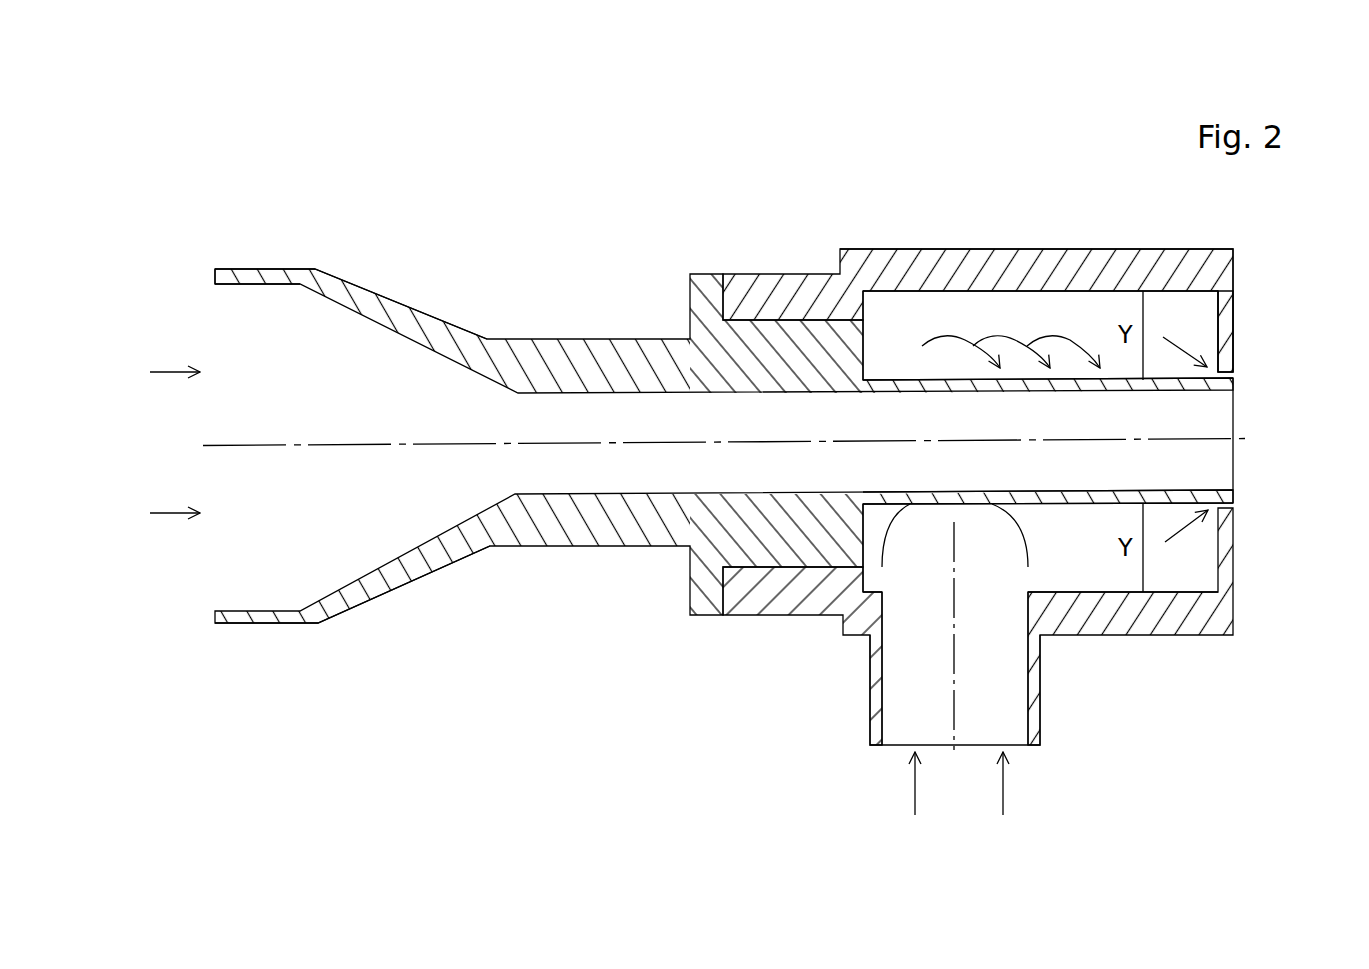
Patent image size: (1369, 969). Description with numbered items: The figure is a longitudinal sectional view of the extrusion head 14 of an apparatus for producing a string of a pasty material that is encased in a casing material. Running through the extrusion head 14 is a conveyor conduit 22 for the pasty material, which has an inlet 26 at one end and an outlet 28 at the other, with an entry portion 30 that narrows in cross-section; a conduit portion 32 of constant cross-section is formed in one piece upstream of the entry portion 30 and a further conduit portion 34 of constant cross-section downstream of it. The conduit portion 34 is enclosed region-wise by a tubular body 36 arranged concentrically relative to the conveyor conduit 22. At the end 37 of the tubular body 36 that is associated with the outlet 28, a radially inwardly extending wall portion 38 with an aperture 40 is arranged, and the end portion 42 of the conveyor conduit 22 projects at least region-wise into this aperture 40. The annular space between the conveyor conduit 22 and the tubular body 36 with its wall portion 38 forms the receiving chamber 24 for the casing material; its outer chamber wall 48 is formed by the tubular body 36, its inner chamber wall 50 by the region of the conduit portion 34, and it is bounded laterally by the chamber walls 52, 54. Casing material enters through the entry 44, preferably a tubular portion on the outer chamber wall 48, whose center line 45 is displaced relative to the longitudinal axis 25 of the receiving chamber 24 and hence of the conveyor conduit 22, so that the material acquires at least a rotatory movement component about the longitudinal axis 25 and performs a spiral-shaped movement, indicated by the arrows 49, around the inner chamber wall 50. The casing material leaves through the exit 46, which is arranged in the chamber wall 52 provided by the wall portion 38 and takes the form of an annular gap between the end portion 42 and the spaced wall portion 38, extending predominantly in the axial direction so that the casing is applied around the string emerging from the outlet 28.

The extrusion head 14 is at (512, 752).
The conveyor conduit 22 is at (552, 604).
The receiving chamber 24 is at (1088, 575).
The longitudinal axis 25 is at (647, 438).
The inlet 26 is at (198, 583).
The outlet 28 is at (1248, 417).
The entry portion 30 is at (447, 347).
The conduit portion 32 is at (252, 278).
The conduit portion 34 is at (1058, 493).
The tubular body 36 is at (980, 268).
The end of the tubular body 37 is at (1242, 258).
The wall portion 38 is at (1225, 315).
The aperture 40 is at (1250, 502).
The end portion 42 is at (1223, 495).
The entry 44 is at (1017, 708).
The center line 45 is at (948, 648).
The exit 46 is at (1233, 373).
The outer chamber wall 48 is at (930, 300).
The arrows 49 is at (997, 338).
The inner chamber wall 50 is at (1162, 509).
The lateral chamber wall 52 is at (1208, 325).
The lateral chamber wall 54 is at (868, 348).